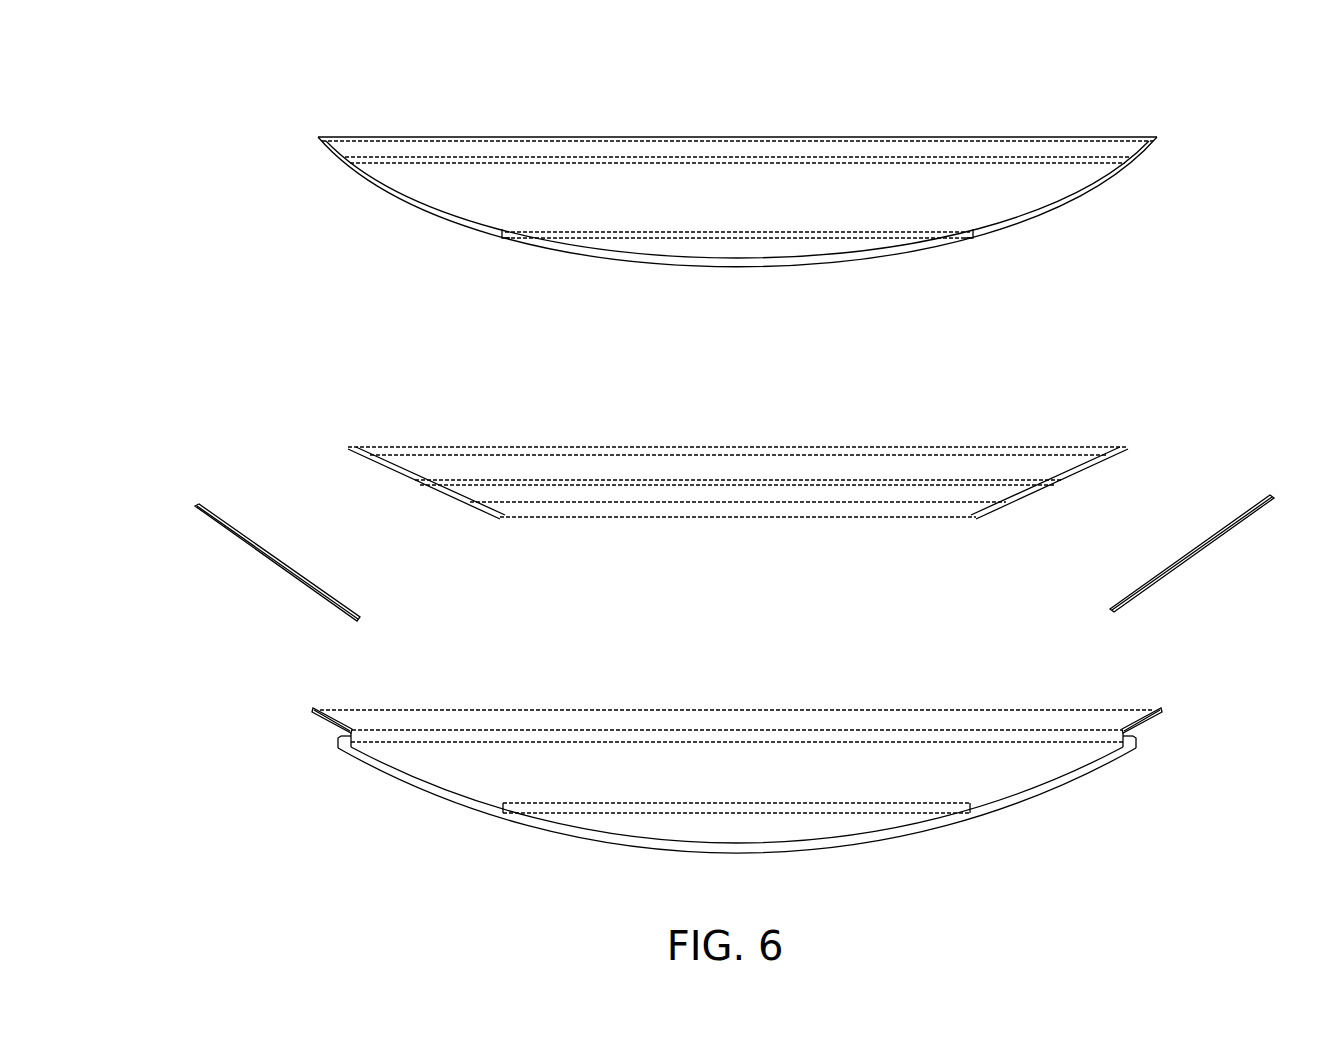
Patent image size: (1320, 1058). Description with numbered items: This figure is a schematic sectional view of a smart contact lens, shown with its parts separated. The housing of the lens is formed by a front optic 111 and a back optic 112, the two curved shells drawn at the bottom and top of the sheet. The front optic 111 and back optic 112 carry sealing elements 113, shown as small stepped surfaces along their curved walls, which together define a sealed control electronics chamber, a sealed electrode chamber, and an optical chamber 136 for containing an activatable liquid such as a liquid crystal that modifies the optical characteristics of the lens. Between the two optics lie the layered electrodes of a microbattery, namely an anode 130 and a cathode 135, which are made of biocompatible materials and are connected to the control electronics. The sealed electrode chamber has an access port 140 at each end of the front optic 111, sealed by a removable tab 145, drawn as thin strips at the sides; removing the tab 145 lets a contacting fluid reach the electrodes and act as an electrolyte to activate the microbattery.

The front optic 111 is at (740, 772).
The back optic 112 is at (1095, 118).
The sealing elements 113 is at (380, 136).
The anode 130 is at (738, 482).
The cathode 135 is at (983, 491).
The optical chamber 136 is at (686, 832).
The access port 140 is at (310, 708).
The removable tab 145 is at (228, 509).